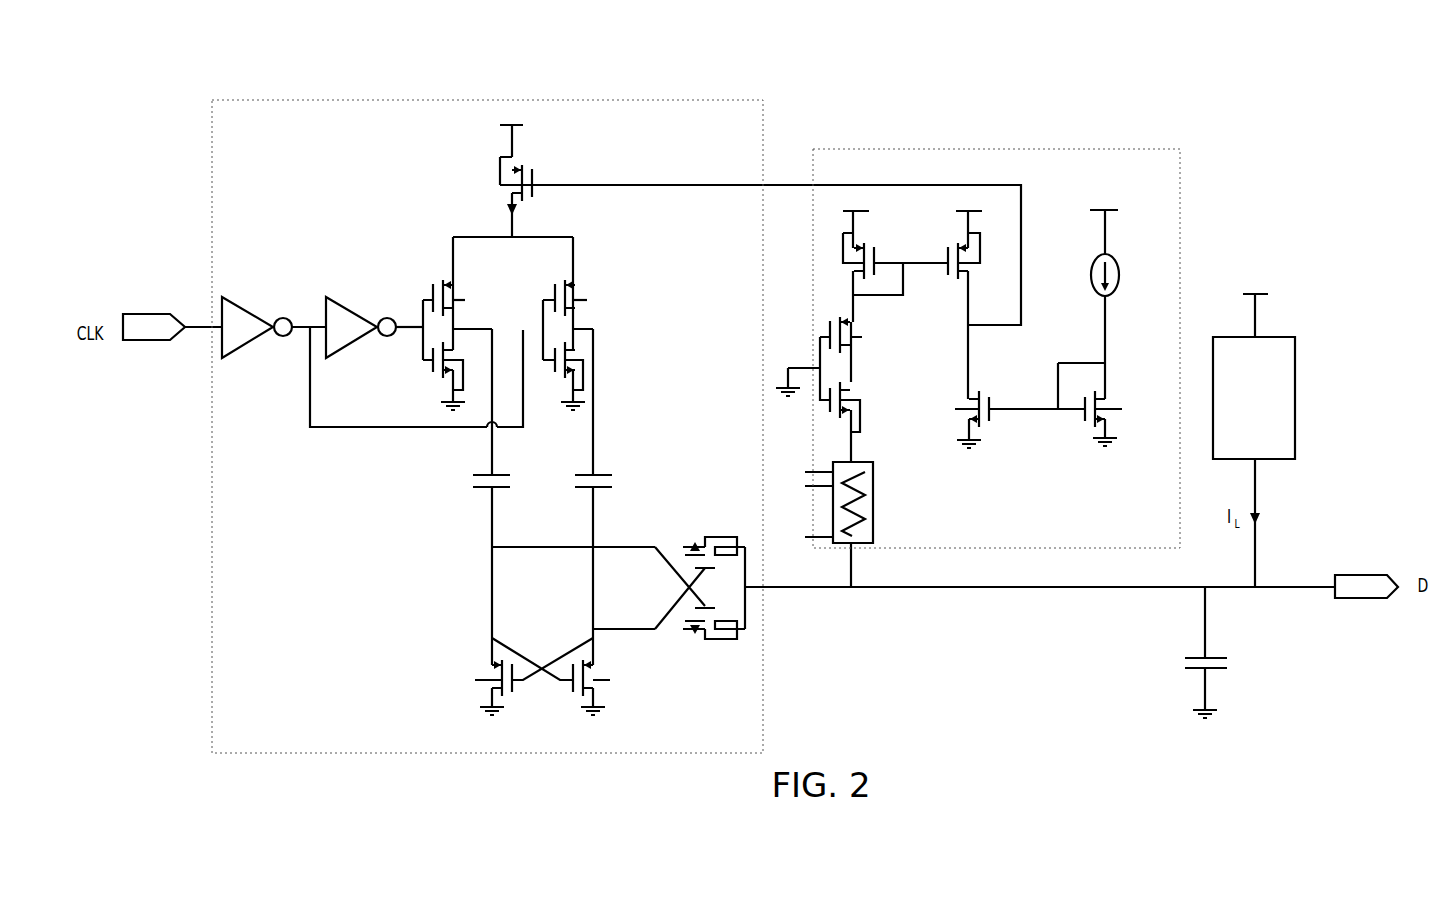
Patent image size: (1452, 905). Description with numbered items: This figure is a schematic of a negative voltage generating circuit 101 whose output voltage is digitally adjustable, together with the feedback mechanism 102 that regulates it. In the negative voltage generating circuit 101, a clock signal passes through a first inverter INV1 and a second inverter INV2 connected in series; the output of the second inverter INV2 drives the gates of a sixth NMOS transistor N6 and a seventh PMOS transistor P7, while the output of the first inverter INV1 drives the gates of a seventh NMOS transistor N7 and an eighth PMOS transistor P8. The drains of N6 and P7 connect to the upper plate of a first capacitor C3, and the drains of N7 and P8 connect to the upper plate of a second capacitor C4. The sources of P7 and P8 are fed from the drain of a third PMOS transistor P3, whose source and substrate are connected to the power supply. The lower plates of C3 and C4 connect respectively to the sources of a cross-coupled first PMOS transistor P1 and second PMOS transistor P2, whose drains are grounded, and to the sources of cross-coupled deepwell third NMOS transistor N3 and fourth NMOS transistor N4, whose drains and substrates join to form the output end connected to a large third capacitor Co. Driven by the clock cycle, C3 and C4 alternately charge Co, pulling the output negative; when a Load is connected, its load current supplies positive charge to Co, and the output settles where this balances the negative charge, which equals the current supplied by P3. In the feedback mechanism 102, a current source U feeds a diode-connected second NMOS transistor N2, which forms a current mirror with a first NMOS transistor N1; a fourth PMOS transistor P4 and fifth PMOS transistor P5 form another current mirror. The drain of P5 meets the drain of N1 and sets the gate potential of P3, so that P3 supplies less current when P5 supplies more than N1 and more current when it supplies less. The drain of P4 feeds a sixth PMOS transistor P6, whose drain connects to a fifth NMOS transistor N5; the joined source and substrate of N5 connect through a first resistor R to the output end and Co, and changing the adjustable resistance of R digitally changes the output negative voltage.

The negative voltage generating circuit 101 is at (487, 440).
The feedback mechanism 102 is at (996, 364).
The first inverter INV1 is at (257, 315).
The second inverter INV2 is at (361, 315).
The first PMOS transistor P1 is at (482, 703).
The second PMOS transistor P2 is at (602, 703).
The third PMOS transistor P3 is at (503, 170).
The fourth PMOS transistor P4 is at (847, 235).
The fifth PMOS transistor P5 is at (974, 234).
The sixth PMOS transistor P6 is at (850, 333).
The seventh PMOS transistor P7 is at (456, 294).
The eighth PMOS transistor P8 is at (579, 290).
The first NMOS transistor N1 is at (964, 419).
The second NMOS transistor N2 is at (1109, 404).
The third NMOS transistor N3 is at (714, 534).
The fourth NMOS transistor N4 is at (714, 637).
The fifth NMOS transistor N5 is at (837, 412).
The sixth NMOS transistor N6 is at (439, 376).
The seventh NMOS transistor N7 is at (557, 376).
The first capacitor C3 is at (481, 480).
The second capacitor C4 is at (579, 480).
The third capacitor Co is at (1195, 702).
The first resistor R is at (837, 502).
The current source U is at (1109, 242).
The load Load is at (1254, 366).